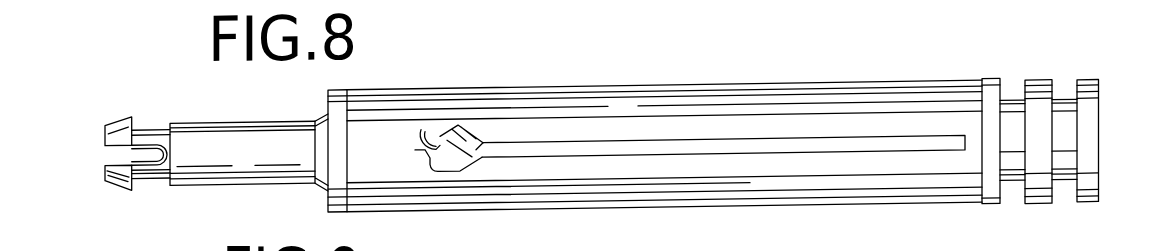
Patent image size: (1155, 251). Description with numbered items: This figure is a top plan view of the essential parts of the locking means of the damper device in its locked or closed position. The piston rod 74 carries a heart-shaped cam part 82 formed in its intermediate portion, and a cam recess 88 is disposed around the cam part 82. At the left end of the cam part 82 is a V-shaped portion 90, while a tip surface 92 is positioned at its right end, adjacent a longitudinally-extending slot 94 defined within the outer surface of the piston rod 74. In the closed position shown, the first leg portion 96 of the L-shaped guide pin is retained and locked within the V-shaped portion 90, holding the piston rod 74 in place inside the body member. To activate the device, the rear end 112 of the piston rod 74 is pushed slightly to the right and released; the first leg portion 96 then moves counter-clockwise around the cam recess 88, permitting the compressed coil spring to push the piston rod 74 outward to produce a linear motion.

The piston rod 74 is at (315, 119).
The heart-shaped cam part 82 is at (450, 142).
The cam recess 88 is at (433, 136).
The V-shaped portion 90 is at (417, 151).
The tip surface 92 is at (480, 149).
The longitudinally-extending slot 94 is at (533, 150).
The first leg portion 96 is at (435, 150).
The rear end 112 is at (110, 123).